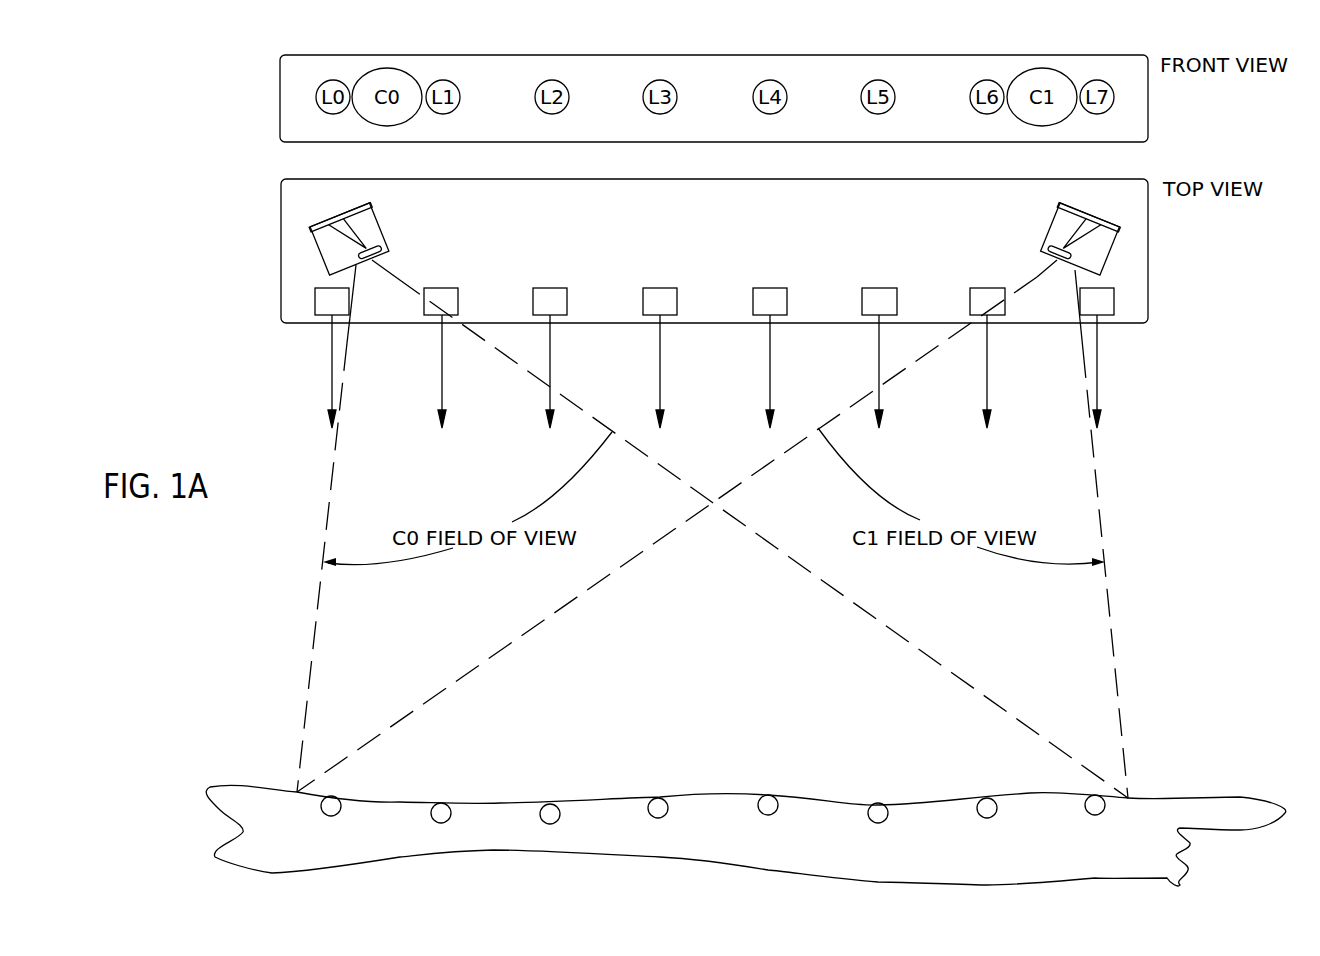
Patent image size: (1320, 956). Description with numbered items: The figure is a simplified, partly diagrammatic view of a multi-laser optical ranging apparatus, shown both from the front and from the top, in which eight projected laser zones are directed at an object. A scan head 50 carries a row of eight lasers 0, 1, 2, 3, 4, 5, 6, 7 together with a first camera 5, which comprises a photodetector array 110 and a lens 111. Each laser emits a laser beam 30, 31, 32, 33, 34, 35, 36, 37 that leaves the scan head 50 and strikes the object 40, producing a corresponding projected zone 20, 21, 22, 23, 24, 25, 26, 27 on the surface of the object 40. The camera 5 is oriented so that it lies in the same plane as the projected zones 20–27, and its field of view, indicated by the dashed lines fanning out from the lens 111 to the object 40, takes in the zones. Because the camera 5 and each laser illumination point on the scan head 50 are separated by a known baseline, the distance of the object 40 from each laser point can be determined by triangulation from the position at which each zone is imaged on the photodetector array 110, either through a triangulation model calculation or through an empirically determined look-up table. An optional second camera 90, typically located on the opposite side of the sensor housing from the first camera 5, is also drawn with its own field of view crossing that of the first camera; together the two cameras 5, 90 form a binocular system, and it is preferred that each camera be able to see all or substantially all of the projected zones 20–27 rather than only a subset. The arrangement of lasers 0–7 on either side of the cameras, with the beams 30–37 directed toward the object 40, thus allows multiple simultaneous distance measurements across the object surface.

The laser 0 is at (298, 316).
The laser 1 is at (454, 283).
The laser 2 is at (563, 283).
The laser 3 is at (673, 283).
The laser 4 is at (782, 283).
The camera 5 is at (315, 250).
The laser 6 is at (999, 283).
The laser 7 is at (1134, 311).
The projected zone 20 is at (330, 820).
The projected zone 21 is at (440, 828).
The projected zone 22 is at (549, 828).
The projected zone 23 is at (658, 824).
The projected zone 24 is at (767, 818).
The projected zone 25 is at (877, 830).
The projected zone 26 is at (986, 821).
The projected zone 27 is at (1094, 819).
The laser beam 30 is at (326, 380).
The laser beam 31 is at (436, 380).
The laser beam 32 is at (545, 380).
The laser beam 33 is at (654, 380).
The laser beam 34 is at (764, 380).
The laser beam 35 is at (873, 380).
The laser beam 36 is at (993, 380).
The laser beam 37 is at (1103, 380).
The object 40 is at (746, 835).
The scan head 50 is at (746, 251).
The second camera 90 is at (1116, 250).
The photodetector array 110 is at (300, 208).
The lens 111 is at (303, 272).